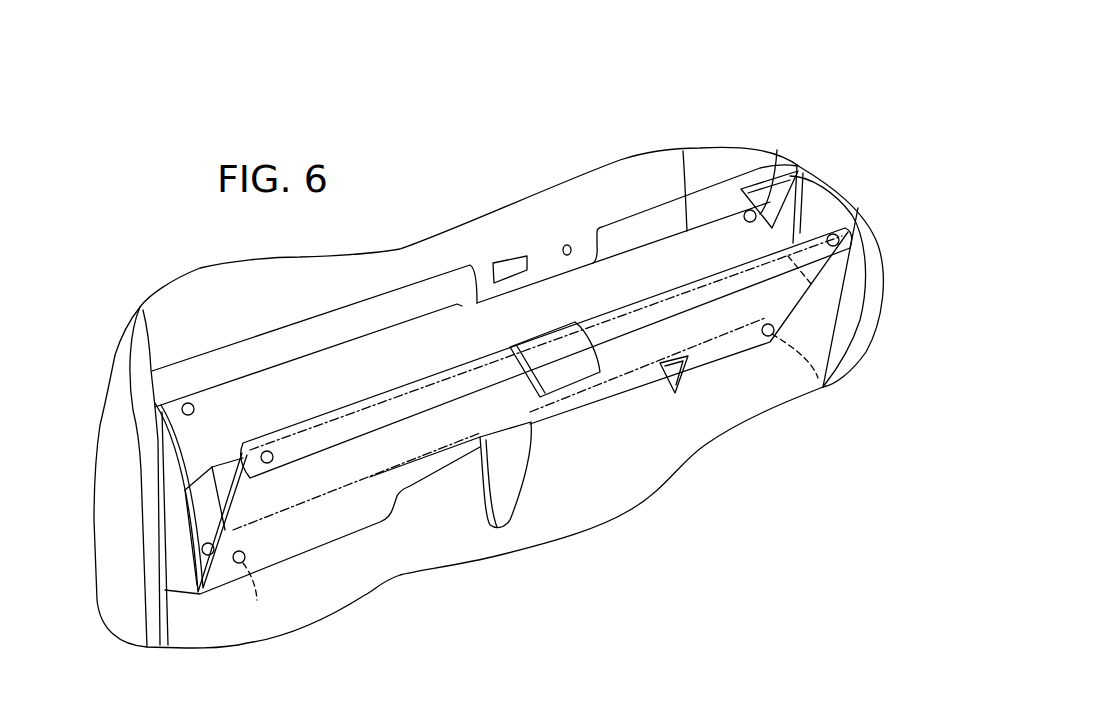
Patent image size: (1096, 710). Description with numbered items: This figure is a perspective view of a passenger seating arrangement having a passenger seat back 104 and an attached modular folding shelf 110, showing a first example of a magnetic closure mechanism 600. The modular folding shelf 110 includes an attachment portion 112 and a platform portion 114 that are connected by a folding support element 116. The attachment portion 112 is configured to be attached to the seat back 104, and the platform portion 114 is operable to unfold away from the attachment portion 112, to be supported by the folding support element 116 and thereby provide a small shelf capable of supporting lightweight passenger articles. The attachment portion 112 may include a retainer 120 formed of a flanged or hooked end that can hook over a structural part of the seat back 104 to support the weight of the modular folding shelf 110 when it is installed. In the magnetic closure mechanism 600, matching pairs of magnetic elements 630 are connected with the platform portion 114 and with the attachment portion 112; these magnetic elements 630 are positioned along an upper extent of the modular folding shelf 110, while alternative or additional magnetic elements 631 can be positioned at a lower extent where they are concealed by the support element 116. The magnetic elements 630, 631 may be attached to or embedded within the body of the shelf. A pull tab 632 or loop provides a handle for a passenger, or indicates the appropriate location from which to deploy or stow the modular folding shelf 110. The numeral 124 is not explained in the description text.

The magnetic closure mechanism 600 is at (615, 130).
The seat back 104 is at (137, 390).
The modular folding shelf 110 is at (858, 296).
The attachment portion 112 is at (805, 174).
The platform portion 114 is at (720, 316).
The folding support element 116 is at (185, 490).
The retainer 120 is at (683, 151).
The panel edge flange 124 is at (153, 430).
The magnetic elements 630 is at (195, 407).
The magnetic elements 631 is at (824, 388).
The pull tab 632 is at (574, 371).